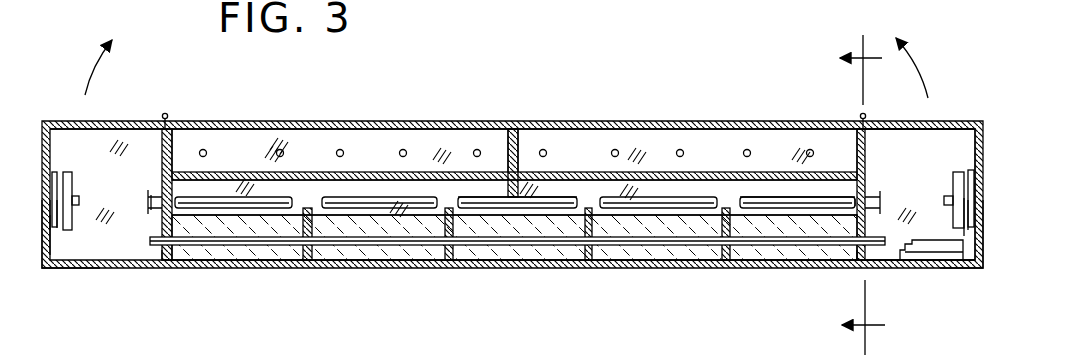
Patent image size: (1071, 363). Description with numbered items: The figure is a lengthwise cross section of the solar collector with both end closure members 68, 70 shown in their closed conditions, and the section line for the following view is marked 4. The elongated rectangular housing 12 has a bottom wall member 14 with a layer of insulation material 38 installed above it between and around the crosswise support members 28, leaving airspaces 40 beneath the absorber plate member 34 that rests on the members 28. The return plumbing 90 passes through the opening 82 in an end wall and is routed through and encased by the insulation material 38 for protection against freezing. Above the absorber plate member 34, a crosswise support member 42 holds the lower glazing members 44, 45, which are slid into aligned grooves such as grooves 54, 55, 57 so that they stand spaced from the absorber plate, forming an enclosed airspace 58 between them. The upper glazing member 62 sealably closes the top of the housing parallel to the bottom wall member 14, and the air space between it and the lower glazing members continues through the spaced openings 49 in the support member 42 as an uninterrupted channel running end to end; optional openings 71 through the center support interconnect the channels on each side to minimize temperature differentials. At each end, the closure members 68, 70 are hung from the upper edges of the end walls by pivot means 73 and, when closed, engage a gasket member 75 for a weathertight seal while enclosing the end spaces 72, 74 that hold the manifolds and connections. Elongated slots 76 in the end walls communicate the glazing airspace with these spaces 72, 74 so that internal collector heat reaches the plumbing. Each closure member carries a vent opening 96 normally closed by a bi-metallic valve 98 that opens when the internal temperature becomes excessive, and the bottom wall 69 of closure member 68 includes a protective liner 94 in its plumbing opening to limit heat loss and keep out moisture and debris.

The end closure member 70 is at (60, 114).
The vent opening 96 is at (41, 205).
The bottom wall member 14 is at (362, 265).
The bottom wall of closure member 69 is at (896, 268).
The upper glazing member 62 is at (262, 128).
The slot 76 is at (162, 145).
The pivot means 73 is at (167, 118).
The enclosed end space 72 is at (903, 128).
The gasket member 75 is at (162, 270).
The housing 12 is at (548, 0).
The opening 82 is at (654, 17).
The lower glazing member 45 is at (316, 172).
The lower glazing member 44 is at (576, 176).
The opening 71 is at (744, 150).
The opening 49 is at (527, 128).
The groove 57 is at (497, 130).
The absorber plate member 34 is at (640, 208).
The airspace 58 is at (686, 208).
The crosswise support member 42 is at (562, 208).
The groove 55 is at (150, 190).
The groove 54 is at (868, 180).
The insulation material 38 is at (212, 260).
The return plumbing 90 is at (410, 265).
The airspace 40 is at (272, 258).
The crosswise support member 28 is at (463, 268).
The bi-metallic valve 98 is at (90, 152).
The protective liner 94 is at (944, 272).
The enclosed end space 74 is at (106, 228).
The end closure member 68 is at (948, 118).
The section line 4- 4 is at (864, 197).